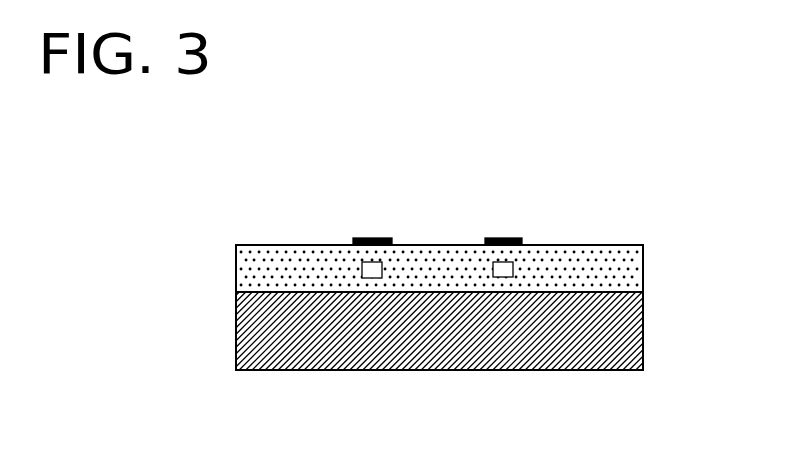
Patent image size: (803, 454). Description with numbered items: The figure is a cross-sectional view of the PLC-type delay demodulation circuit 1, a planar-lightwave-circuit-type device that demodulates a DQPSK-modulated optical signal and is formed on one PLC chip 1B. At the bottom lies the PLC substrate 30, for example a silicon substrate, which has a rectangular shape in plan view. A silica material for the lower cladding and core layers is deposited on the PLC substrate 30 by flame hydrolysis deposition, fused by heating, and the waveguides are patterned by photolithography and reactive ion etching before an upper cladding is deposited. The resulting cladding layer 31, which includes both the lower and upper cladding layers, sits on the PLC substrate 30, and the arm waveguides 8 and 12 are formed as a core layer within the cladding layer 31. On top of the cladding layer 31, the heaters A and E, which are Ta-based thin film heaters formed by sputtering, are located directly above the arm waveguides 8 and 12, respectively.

The PLC-type delay demodulation circuit 1 is at (264, 215).
The PLC chip 1B is at (224, 285).
The cladding layer 31 is at (643, 260).
The PLC substrate 30 is at (547, 370).
The arm waveguide 8 is at (382, 268).
The arm waveguide 12 is at (513, 268).
The heater A is at (362, 240).
The heater E is at (494, 239).